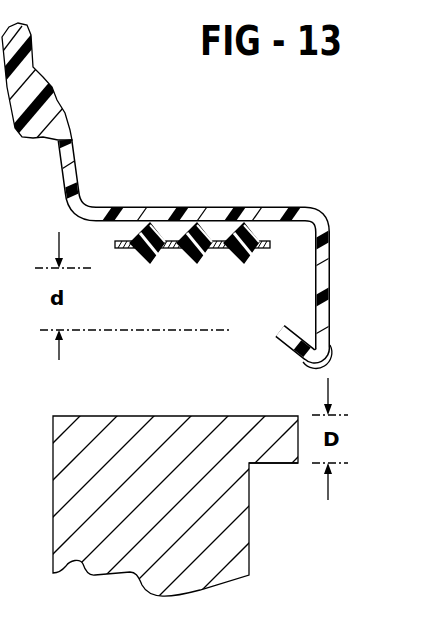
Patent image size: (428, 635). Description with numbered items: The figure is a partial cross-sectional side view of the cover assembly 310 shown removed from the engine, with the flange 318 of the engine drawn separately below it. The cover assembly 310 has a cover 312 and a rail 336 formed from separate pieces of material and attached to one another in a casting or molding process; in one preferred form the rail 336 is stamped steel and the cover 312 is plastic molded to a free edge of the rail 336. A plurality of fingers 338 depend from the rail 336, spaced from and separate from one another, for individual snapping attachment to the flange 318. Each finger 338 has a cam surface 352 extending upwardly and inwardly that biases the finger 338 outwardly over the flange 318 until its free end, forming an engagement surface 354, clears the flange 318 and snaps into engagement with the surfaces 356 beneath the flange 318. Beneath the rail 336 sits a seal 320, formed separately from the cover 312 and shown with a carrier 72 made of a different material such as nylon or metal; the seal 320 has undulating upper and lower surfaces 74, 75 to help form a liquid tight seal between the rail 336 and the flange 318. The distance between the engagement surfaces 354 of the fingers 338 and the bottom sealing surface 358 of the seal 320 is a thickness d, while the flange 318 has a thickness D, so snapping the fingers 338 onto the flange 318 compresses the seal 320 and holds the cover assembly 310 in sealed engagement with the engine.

The cover assembly 310 is at (178, 136).
The cover 312 is at (38, 58).
The rail 336 is at (272, 200).
The fingers 338 is at (330, 241).
The engagement surfaces 354 is at (284, 331).
The cam surfaces 352 is at (292, 350).
The upper surface 74 is at (196, 207).
The carrier 72 is at (112, 248).
The bottom sealing surface 358 is at (148, 265).
The lower surface 75 is at (197, 263).
The seal 320 is at (113, 244).
The flange 318 is at (299, 446).
The surfaces beneath the flange 356 is at (272, 464).